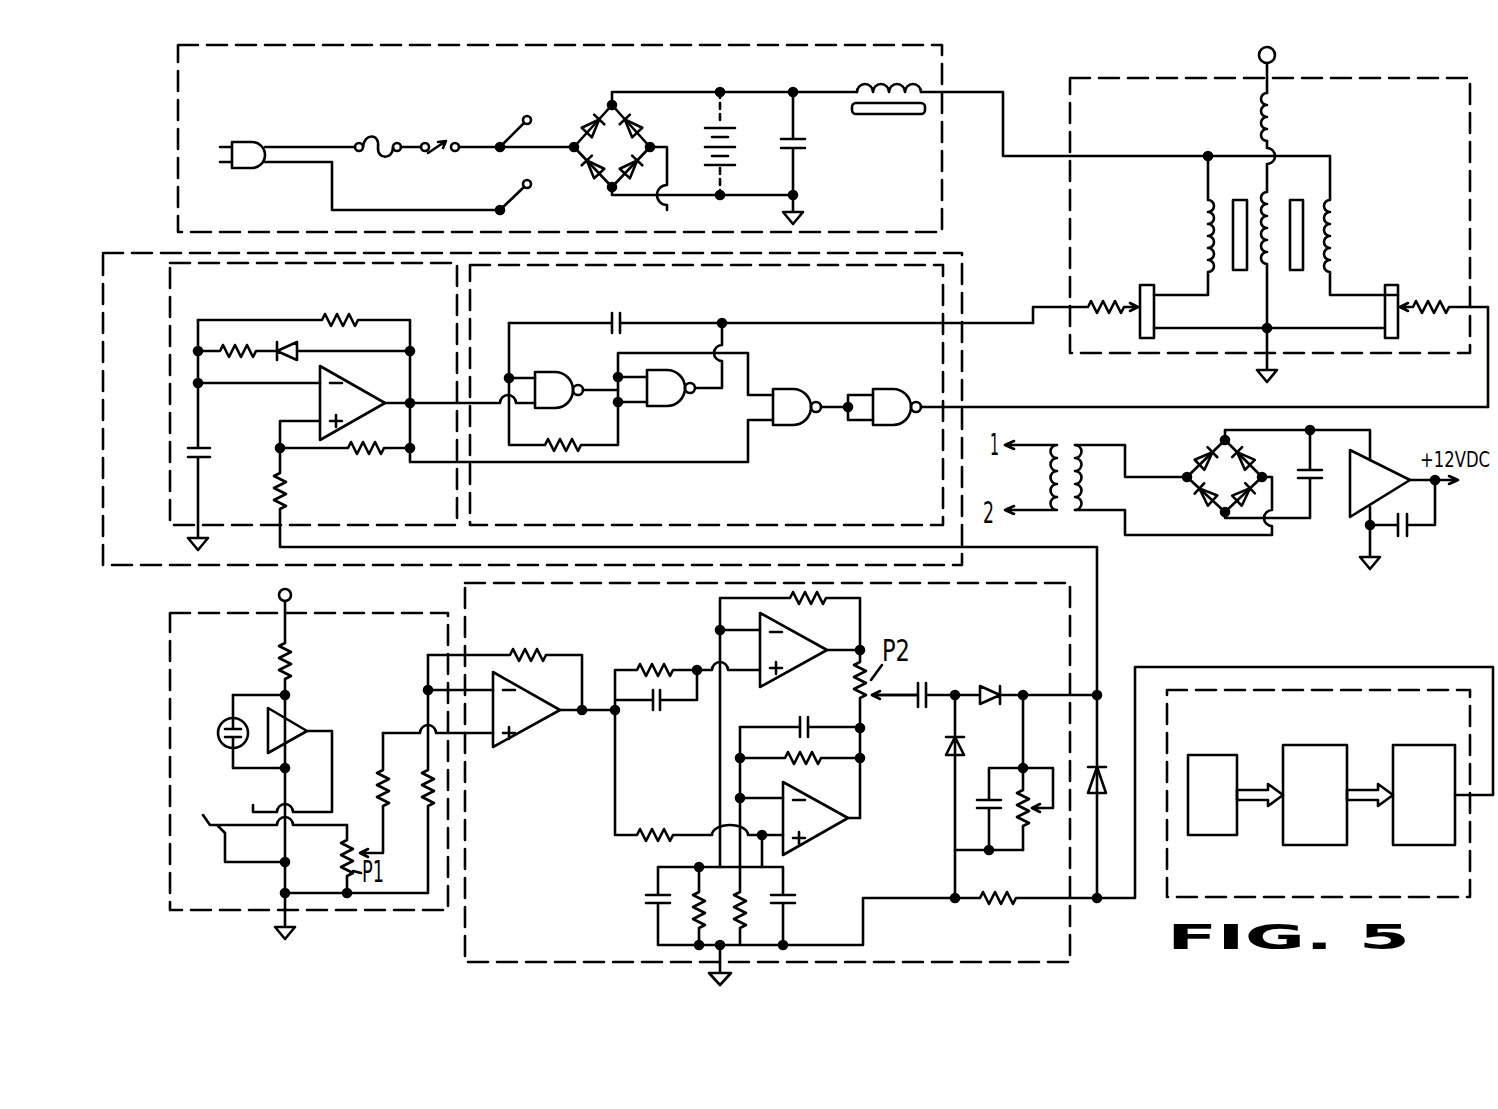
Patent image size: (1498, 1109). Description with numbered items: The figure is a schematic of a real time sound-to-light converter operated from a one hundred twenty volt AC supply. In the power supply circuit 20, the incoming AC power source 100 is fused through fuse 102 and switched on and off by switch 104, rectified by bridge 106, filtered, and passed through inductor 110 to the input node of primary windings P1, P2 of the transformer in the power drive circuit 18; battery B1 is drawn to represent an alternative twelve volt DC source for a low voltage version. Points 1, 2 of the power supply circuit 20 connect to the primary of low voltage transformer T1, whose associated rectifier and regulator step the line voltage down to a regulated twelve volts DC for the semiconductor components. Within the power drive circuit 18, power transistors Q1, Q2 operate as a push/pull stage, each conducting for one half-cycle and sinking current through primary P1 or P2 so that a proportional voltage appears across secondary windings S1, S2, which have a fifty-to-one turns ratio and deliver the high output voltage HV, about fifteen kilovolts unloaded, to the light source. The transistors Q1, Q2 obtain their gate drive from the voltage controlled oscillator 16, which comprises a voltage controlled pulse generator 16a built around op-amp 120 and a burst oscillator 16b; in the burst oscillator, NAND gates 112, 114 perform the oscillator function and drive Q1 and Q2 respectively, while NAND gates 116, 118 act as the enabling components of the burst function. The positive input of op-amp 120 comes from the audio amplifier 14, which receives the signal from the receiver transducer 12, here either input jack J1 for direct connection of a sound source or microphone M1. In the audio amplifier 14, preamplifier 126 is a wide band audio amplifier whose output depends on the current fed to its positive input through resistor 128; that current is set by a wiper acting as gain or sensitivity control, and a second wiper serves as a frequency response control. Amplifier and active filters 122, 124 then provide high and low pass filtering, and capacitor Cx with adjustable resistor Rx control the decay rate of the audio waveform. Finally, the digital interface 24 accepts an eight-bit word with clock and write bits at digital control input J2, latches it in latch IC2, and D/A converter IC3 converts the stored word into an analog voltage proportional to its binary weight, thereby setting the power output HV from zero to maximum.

The power supply circuit 20 is at (178, 92).
The incoming 120 volt AC power source 100 is at (245, 142).
The fuse 102 is at (392, 128).
The switch 104 is at (433, 152).
The point 1 of power supply circuit 1 is at (513, 118).
The point 2 of power supply circuit 2 is at (513, 180).
The bridge 106 is at (608, 112).
The battery B1 is at (735, 143).
The inductor 110 is at (866, 88).
The power drive circuit 18 is at (1413, 78).
The output voltage HV is at (1286, 56).
The secondary winding S2 is at (1286, 117).
The secondary winding S1 is at (1280, 216).
The primary winding P1 is at (1184, 225).
The primary winding P2 is at (1361, 225).
The power transistor Q1 is at (1093, 291).
The power transistor Q2 is at (1436, 325).
The voltage controlled oscillator 16 is at (962, 261).
The voltage controlled pulse generator 16a is at (170, 292).
The burst oscillator 16b is at (946, 298).
The op-amp 120 is at (361, 373).
The NAND gate 116 is at (552, 371).
The NAND gate 112 is at (677, 408).
The NAND gate 118 is at (794, 388).
The NAND gate 114 is at (897, 425).
The low voltage transformer T1 is at (1082, 490).
The audio amplifier 14 is at (1027, 583).
The receiver transducer 12 is at (170, 643).
The microphone M1 is at (219, 727).
The input jack J1 is at (214, 831).
The resistor 128 is at (380, 778).
The preamplifier 126 is at (526, 733).
The amplifier and active filter 122 is at (797, 634).
The amplifier and active filter 124 is at (803, 849).
The capacitor Cx is at (990, 809).
The resistor Rx is at (1037, 774).
The digital interface 24 is at (1440, 898).
The digital control input J2 is at (1212, 795).
The latch IC2 is at (1333, 846).
The D/A converter IC3 is at (1437, 846).